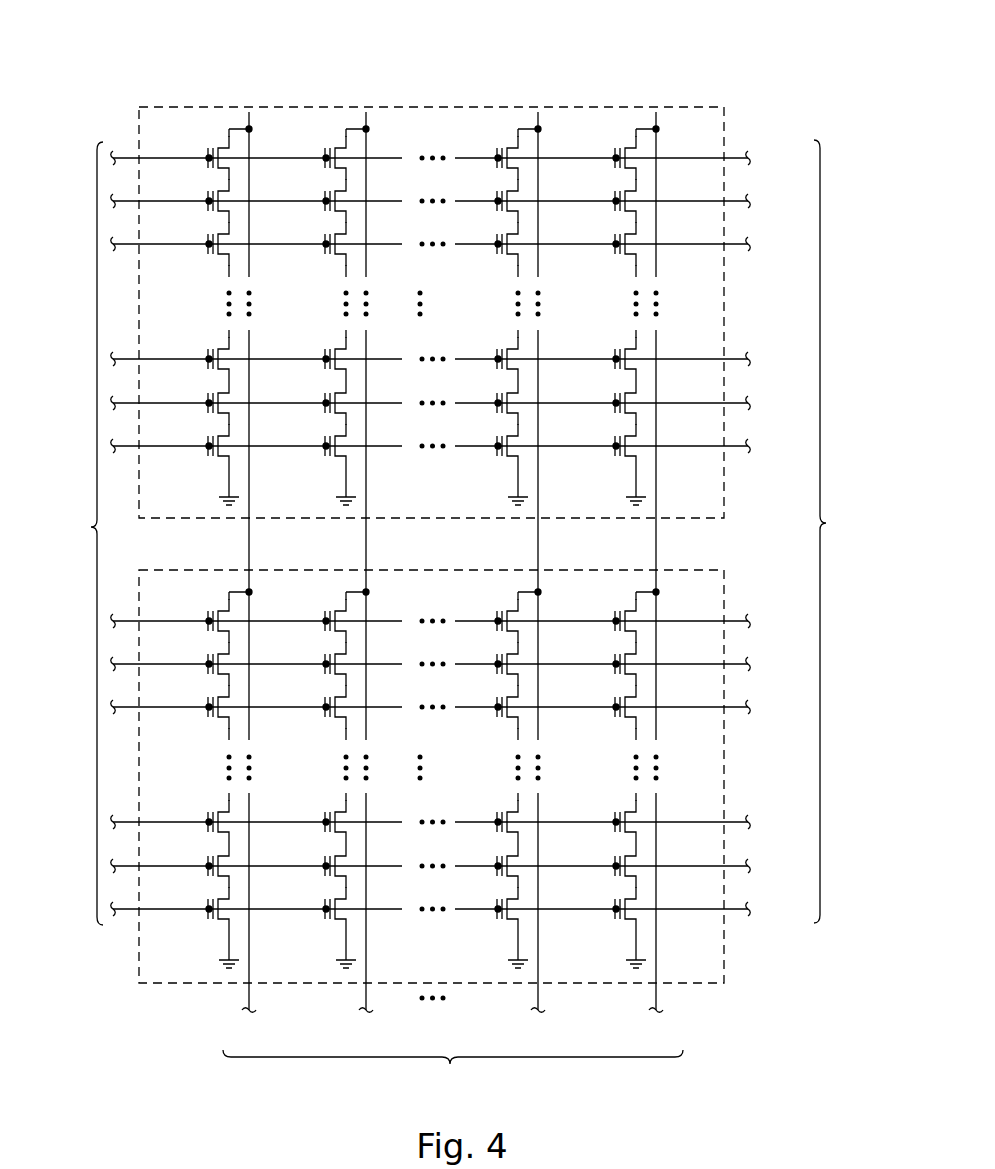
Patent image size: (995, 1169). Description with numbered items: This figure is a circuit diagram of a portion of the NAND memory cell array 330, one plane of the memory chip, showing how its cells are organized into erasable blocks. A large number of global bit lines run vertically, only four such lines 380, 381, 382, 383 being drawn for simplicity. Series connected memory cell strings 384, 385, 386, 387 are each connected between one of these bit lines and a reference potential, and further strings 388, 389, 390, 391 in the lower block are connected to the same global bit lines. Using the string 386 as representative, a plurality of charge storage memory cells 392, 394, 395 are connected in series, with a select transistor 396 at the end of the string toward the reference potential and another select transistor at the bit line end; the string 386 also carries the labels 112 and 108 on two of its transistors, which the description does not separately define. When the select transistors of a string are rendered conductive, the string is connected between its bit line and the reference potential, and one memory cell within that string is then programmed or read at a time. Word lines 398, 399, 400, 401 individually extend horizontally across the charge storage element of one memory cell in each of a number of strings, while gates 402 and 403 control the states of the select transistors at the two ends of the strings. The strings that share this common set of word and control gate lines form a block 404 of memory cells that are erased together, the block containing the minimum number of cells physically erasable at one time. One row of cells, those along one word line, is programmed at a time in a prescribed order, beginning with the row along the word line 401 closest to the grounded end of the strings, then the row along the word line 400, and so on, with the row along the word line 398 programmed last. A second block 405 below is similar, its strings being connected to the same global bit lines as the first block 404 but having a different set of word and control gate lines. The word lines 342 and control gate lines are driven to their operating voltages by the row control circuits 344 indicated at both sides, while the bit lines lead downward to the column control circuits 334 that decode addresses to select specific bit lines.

The memory cell array 330 is at (404, 528).
The block 404 is at (407, 95).
The second block 405 is at (518, 992).
The global bit line 380 is at (252, 145).
The global bit line 381 is at (369, 145).
The global bit line 382 is at (545, 143).
The global bit line 383 is at (658, 145).
The memory cell string 384 is at (216, 337).
The memory cell string 385 is at (333, 337).
The memory cell string 386 is at (472, 400).
The memory cell string 387 is at (622, 333).
The NAND string 388 is at (216, 800).
The NAND string 389 is at (333, 800).
The NAND string 390 is at (505, 797).
The NAND string 391 is at (622, 797).
The select gate transistor 112 is at (508, 148).
The charge storage memory cell 392 is at (502, 200).
The memory cell transistor 108 is at (502, 243).
The charge storage memory cell 394 is at (500, 358).
The charge storage memory cell 395 is at (500, 402).
The select transistor 396 is at (502, 445).
The gate 402 is at (733, 158).
The word line 398 is at (733, 201).
The word line 399 is at (733, 244).
The word line 400 is at (733, 359).
The word line 401 is at (733, 403).
The gate 403 is at (733, 446).
The word lines 342 is at (76, 533).
The row control circuits 344 is at (474, 531).
The column control circuits 334 is at (453, 1079).